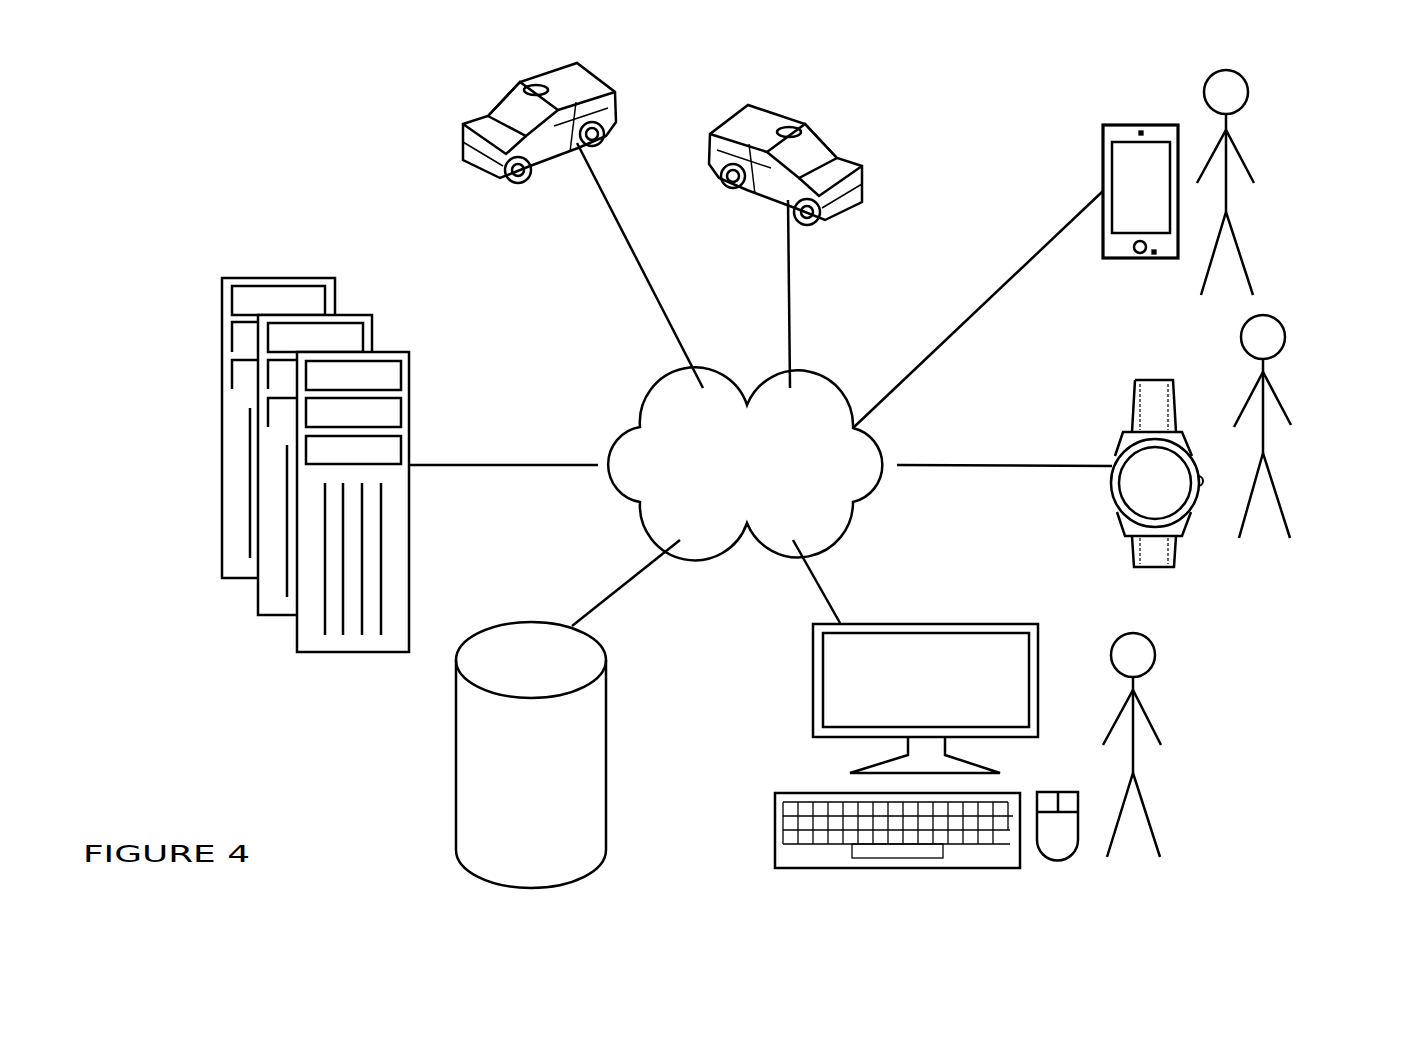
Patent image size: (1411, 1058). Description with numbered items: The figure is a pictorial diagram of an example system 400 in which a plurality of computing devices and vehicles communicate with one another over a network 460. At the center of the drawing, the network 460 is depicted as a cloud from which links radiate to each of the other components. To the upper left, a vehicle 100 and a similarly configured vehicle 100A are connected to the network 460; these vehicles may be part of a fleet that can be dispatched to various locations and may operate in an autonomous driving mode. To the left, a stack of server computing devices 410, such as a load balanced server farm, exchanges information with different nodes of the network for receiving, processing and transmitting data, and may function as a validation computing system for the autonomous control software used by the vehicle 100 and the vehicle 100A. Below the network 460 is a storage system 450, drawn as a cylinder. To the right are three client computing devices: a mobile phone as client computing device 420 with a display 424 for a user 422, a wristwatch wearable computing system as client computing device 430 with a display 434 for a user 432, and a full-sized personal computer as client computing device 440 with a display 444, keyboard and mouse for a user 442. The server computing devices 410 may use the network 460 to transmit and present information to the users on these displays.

The system 400 is at (186, 802).
The vehicle 100 is at (458, 150).
The vehicle 100A is at (862, 183).
The server computing devices 410 is at (412, 400).
The client computing device 420 is at (1090, 204).
The display 424 is at (1112, 142).
The user 422 is at (1227, 197).
The client computing device 430 is at (1116, 484).
The display 434 is at (1194, 497).
The user 432 is at (1265, 438).
The client computing device 440 is at (957, 708).
The display 444 is at (1029, 650).
The user 442 is at (1133, 757).
The storage system 450 is at (608, 768).
The network 460 is at (600, 493).